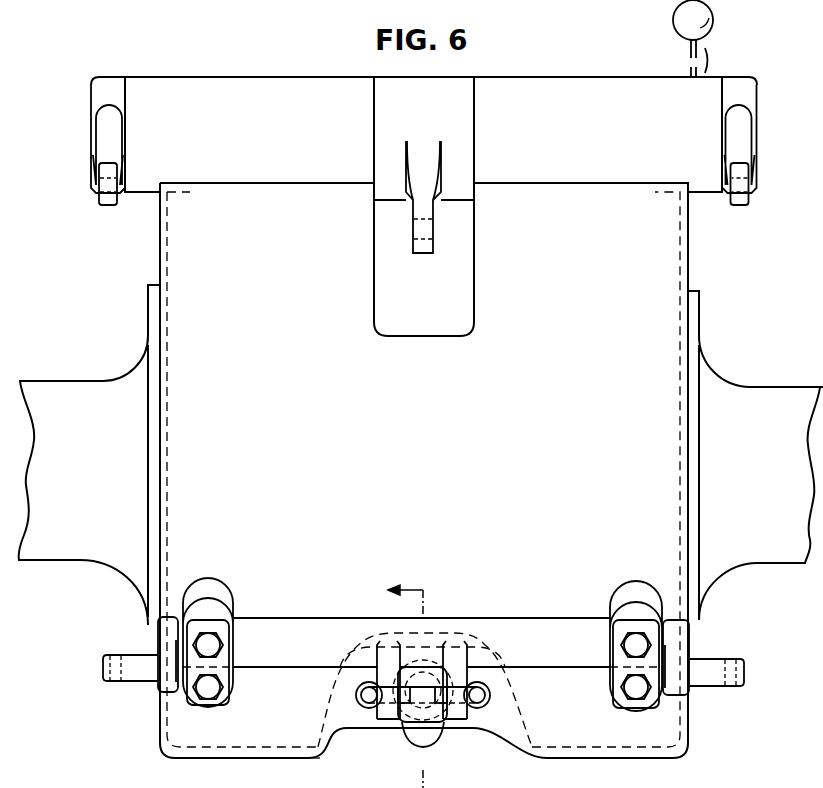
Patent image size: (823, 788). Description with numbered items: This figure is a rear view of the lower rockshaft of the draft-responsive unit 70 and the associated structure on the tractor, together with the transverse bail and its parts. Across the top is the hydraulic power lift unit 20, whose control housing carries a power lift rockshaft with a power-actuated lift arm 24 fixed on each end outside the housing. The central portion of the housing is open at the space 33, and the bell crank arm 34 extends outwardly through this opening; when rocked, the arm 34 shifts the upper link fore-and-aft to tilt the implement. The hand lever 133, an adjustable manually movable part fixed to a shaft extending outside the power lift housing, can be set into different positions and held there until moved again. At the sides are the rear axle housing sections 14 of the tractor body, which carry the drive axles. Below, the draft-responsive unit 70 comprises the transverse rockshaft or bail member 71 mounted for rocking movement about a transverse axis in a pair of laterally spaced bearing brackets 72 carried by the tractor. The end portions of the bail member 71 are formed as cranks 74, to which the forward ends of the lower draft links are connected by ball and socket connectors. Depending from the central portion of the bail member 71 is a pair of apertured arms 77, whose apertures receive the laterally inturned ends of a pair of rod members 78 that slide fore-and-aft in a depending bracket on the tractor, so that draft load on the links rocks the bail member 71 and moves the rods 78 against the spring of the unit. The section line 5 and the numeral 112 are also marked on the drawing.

The power lift unit 20 is at (572, 75).
The lift arm 24 is at (103, 150).
The hand lever 133 is at (712, 22).
The opening in housing 33 is at (476, 269).
The arm 34 is at (416, 216).
The rear axle housing section 14 is at (71, 394).
The rockshaft or bail member 71 is at (522, 624).
The bearing bracket 72 is at (218, 596).
The draft-responsive unit 70 is at (702, 704).
The crank 74 is at (136, 680).
The apertured arm 77 is at (450, 718).
The rod member 78 is at (372, 700).
The section line 5- 5 is at (402, 786).
The lower member 112 is at (266, 773).